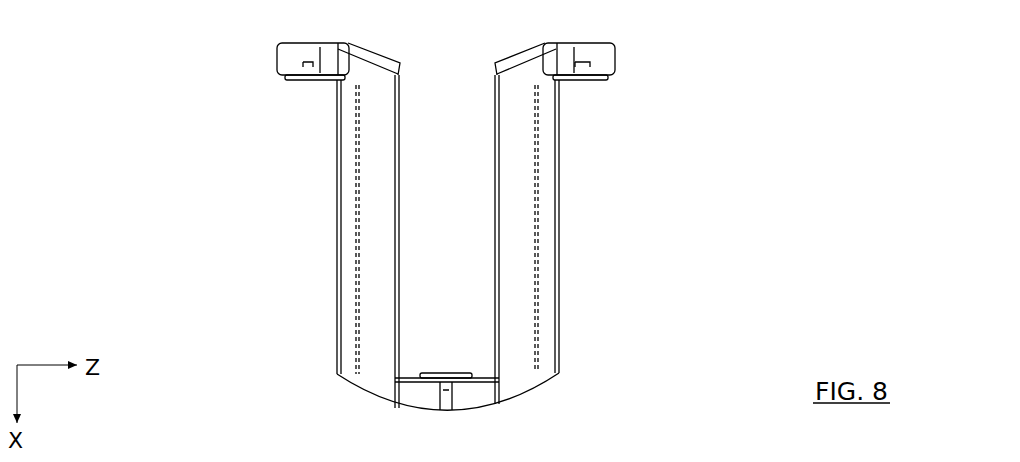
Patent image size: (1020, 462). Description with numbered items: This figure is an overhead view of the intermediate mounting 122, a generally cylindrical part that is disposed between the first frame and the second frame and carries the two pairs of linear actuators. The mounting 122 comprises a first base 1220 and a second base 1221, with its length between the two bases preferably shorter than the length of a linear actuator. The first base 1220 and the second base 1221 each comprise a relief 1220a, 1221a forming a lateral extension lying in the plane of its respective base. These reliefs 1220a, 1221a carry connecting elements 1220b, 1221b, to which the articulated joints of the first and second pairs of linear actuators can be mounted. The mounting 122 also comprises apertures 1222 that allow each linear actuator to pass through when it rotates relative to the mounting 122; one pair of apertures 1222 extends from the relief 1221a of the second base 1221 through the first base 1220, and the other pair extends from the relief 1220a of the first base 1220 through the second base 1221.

The mounting 122 is at (237, 62).
The second base 1221 is at (375, 62).
The relief 1221a is at (311, 54).
The connecting element 1221b is at (310, 70).
The apertures 1222 is at (467, 217).
The first base 1220 is at (383, 390).
The relief 1220a is at (415, 400).
The connecting element 1220b is at (443, 374).